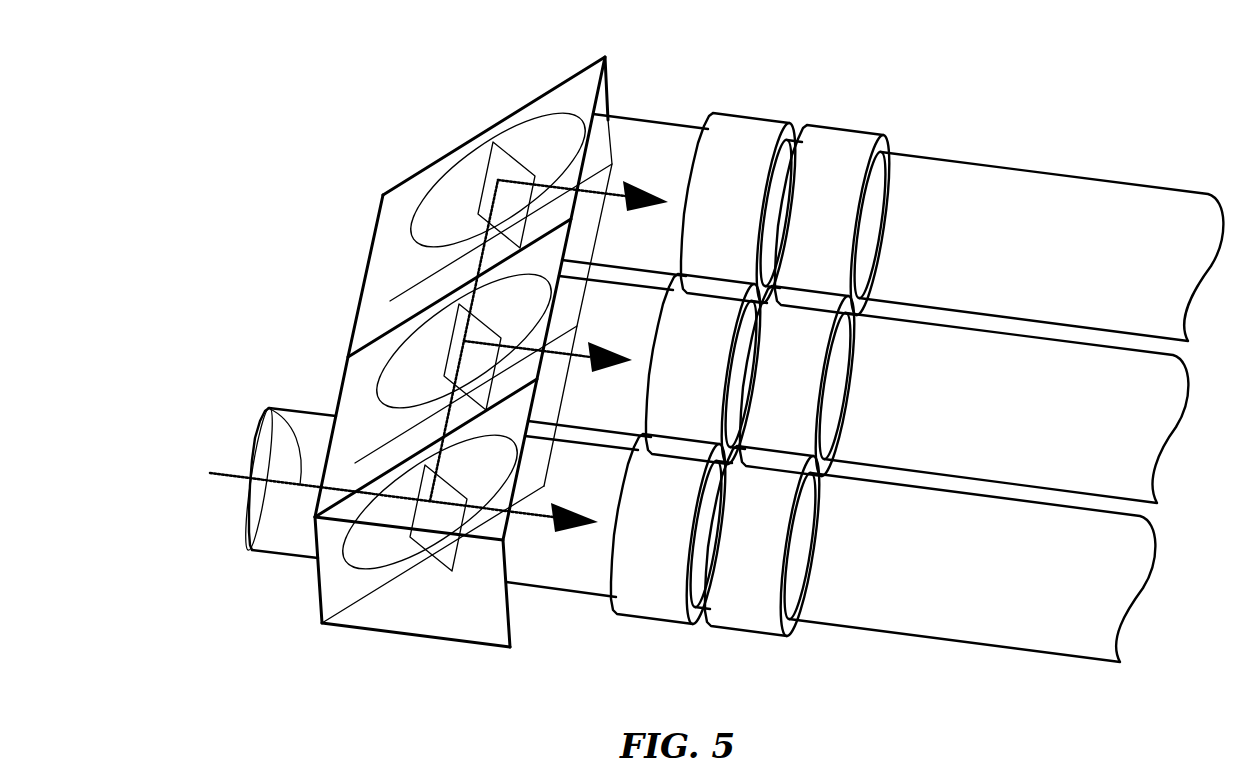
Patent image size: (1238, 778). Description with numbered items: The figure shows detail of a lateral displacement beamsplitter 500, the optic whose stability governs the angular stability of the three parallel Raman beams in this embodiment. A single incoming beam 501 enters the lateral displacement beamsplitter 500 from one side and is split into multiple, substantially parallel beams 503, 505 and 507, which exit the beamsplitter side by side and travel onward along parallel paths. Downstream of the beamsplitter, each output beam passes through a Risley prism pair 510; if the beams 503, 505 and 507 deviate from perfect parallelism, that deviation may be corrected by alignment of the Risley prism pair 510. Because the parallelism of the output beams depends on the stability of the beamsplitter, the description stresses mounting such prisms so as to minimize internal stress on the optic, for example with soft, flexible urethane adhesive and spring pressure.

The lateral displacement beamsplitter 500 is at (683, 86).
The incoming beam 501 is at (300, 470).
The parallel beam 503 is at (537, 184).
The parallel beam 505 is at (520, 344).
The parallel beam 507 is at (520, 523).
The Risley prism pair 510 is at (655, 597).